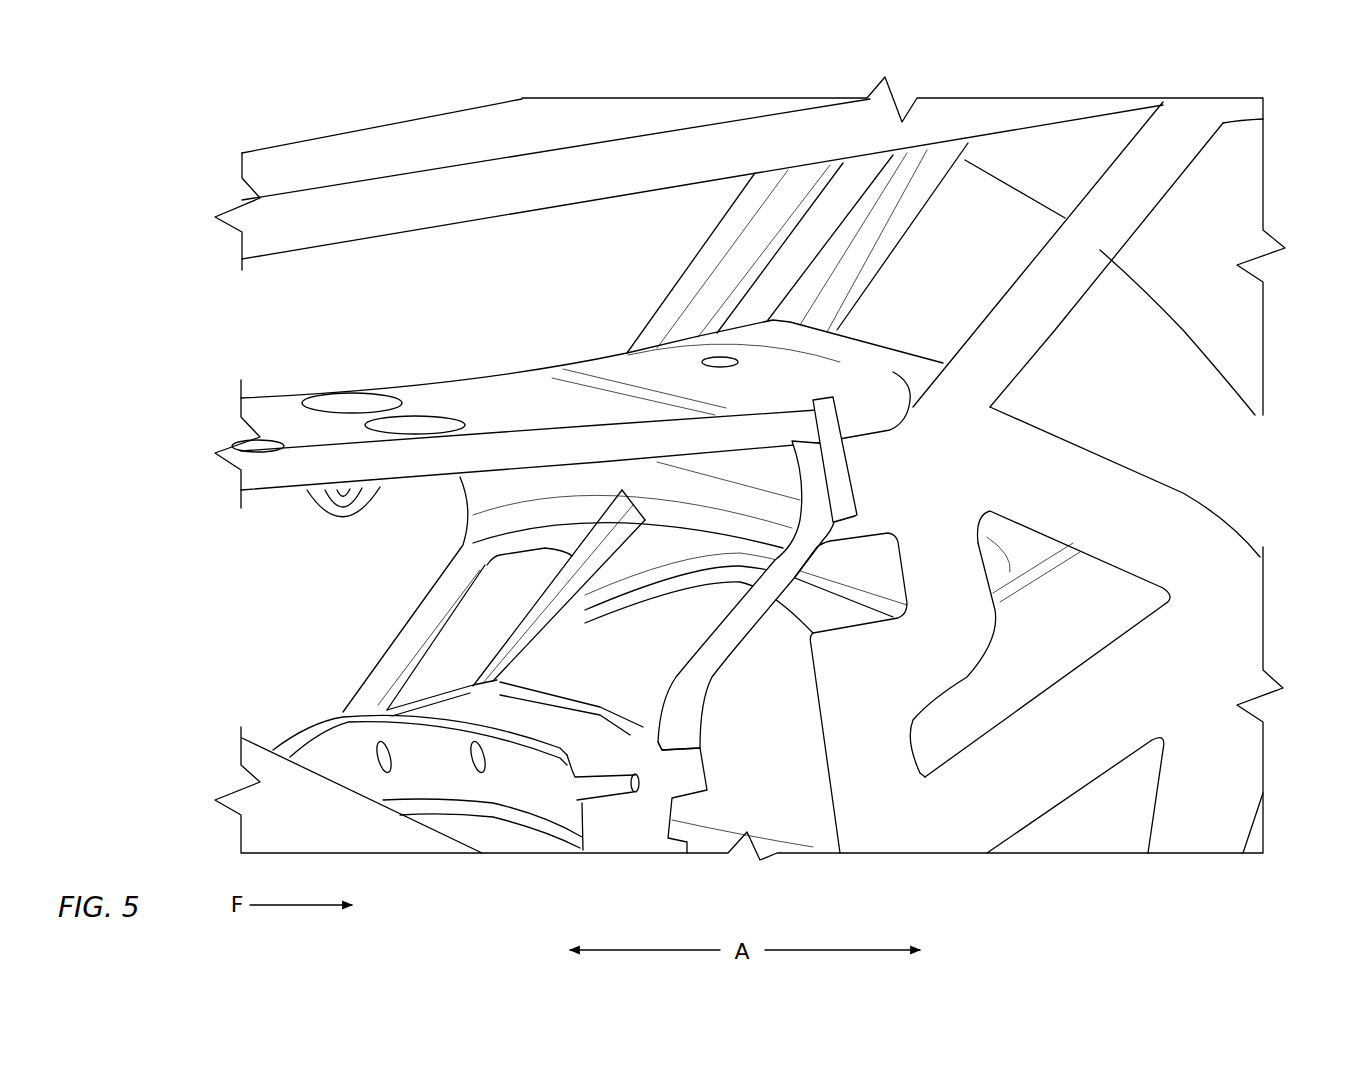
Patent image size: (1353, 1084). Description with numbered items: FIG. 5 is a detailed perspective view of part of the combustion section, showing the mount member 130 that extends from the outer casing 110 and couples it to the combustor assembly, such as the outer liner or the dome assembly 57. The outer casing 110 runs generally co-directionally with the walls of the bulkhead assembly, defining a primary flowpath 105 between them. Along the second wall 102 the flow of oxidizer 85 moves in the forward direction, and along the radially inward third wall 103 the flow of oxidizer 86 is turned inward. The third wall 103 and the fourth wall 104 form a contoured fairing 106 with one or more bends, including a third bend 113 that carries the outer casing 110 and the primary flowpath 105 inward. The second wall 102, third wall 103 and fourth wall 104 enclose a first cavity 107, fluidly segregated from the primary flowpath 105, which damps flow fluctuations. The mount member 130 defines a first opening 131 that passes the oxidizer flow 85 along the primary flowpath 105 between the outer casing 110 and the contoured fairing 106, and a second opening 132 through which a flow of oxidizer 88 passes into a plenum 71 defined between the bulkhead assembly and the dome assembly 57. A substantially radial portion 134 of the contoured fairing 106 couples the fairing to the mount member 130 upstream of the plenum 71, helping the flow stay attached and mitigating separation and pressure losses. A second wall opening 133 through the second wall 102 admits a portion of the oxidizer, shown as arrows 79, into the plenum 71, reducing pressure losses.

The dome assembly 57 is at (505, 830).
The plenum 71 is at (246, 565).
The arrows (portion of oxidizer flow) 79 is at (277, 368).
The arrows (flow of oxidizer) 85 is at (379, 322).
The arrows (flow of oxidizer) 86 is at (1195, 427).
The arrows (flow of oxidizer) 88 is at (473, 660).
The second wall 102 is at (497, 405).
The third wall 103 is at (1172, 525).
The fourth wall 104 is at (857, 790).
The primary flowpath 105 is at (560, 283).
The contoured fairing 106 is at (1210, 627).
The first cavity 107 is at (1100, 612).
The outer casing 110 is at (362, 162).
The third bend 113 is at (1202, 470).
The mount member 130 is at (1087, 232).
The first opening 131 is at (972, 236).
The second opening 132 is at (479, 611).
The second wall opening 133 is at (410, 425).
The substantially radial portion 134 is at (967, 594).